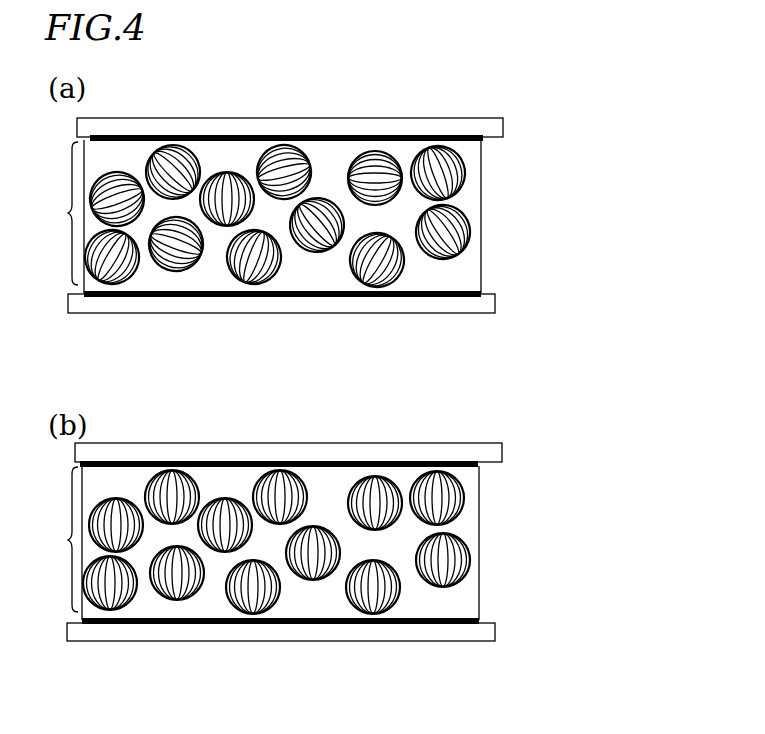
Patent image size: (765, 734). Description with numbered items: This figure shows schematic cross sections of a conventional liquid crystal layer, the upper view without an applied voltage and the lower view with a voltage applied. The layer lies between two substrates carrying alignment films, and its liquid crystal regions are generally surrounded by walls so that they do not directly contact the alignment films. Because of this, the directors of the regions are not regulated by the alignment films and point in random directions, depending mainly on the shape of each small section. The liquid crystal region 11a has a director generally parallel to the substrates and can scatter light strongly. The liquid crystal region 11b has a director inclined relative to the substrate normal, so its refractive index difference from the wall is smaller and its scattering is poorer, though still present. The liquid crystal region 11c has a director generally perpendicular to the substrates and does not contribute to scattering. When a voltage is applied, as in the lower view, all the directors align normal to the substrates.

The liquid crystal region 11a is at (383, 151).
The liquid crystal region 11b is at (133, 283).
The liquid crystal region 11c is at (230, 172).